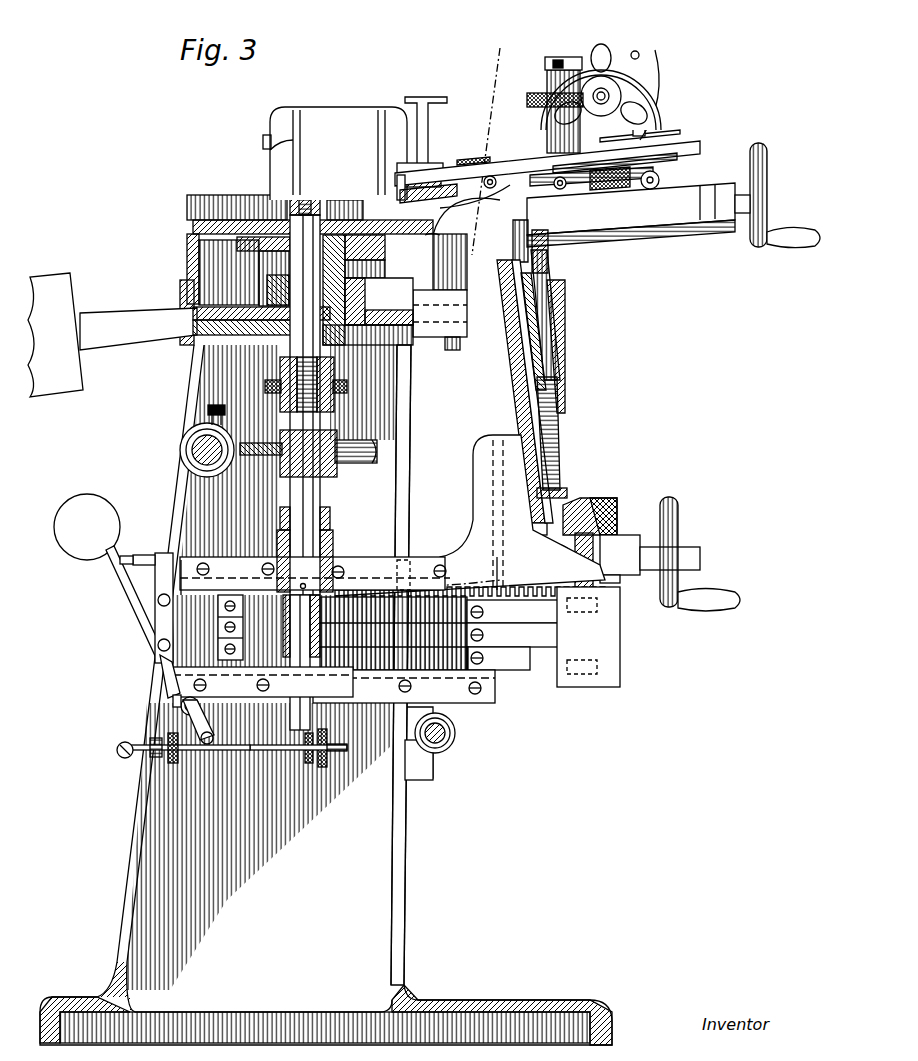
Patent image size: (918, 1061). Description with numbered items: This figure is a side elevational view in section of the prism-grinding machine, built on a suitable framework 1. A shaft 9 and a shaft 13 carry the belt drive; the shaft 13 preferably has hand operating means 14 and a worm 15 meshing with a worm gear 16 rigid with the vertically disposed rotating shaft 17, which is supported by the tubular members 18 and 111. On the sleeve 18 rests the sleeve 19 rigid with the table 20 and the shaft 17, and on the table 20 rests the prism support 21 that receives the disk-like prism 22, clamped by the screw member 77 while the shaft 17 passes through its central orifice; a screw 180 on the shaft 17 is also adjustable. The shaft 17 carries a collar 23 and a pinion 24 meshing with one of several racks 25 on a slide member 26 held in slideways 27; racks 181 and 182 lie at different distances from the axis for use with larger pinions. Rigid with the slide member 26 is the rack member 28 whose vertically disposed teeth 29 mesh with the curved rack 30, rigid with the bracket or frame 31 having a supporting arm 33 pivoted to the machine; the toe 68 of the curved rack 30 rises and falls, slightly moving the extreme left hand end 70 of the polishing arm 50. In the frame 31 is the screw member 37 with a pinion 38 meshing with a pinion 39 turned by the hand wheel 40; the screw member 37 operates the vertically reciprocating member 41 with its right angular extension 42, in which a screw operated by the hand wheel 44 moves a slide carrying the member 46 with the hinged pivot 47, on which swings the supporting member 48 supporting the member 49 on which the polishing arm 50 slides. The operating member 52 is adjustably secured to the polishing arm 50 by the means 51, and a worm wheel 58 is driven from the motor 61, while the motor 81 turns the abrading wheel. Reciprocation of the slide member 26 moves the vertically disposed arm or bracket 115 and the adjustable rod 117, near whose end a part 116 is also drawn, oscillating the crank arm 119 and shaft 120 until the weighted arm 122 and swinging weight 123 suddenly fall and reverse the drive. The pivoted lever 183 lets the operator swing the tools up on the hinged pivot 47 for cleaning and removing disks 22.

The framework 1 is at (128, 850).
The shaft 9 is at (447, 738).
The shaft 13 is at (205, 450).
The hand operating means 14 is at (356, 541).
The worm 15 is at (198, 428).
The worm gear 16 is at (365, 448).
The vertically disposed rotating shaft 17 is at (200, 320).
The tubular member 18 is at (330, 365).
The sleeve 19 is at (352, 298).
The table 20 is at (370, 258).
The prism support 21 is at (438, 230).
The disk like prism 22 is at (220, 222).
The collar 23 is at (275, 582).
The pinion 24 is at (268, 648).
The racks 25 is at (222, 612).
The slide member 26 is at (160, 610).
The slideways 27 is at (462, 700).
The rack member 28 is at (548, 615).
The vertically disposed teeth 29 is at (558, 607).
The curved rack 30 is at (455, 570).
The bracket or frame 31 is at (518, 400).
The supporting arm 33 is at (500, 262).
The screw member 37 is at (558, 440).
The pinion 38 is at (585, 500).
The pinion 39 is at (625, 535).
The hand wheel 40 is at (680, 515).
The vertically reciprocating member 41 is at (562, 358).
The right angular extension 42 is at (675, 230).
The hand wheel 44 is at (764, 165).
The member 46 is at (620, 192).
The hinged pivot 47 is at (660, 180).
The supporting member 48 is at (610, 182).
The member 49 is at (640, 126).
The polishing arm 50 is at (496, 165).
The means 51 is at (680, 132).
The operating member 52 is at (660, 66).
The worm wheel 58 is at (530, 98).
The motor 61 is at (625, 45).
The toe 68 is at (548, 562).
The extreme left hand end 70 is at (458, 160).
The screw member 77 is at (320, 195).
The motor 81 is at (343, 116).
The tubular member 111 is at (277, 538).
The vertically disposed arm or bracket 115 is at (158, 634).
The screw 116 is at (118, 745).
The adjustable rod 117 is at (222, 748).
The crank arm 119 is at (205, 720).
The shaft 120 is at (180, 705).
The weighted arm 122 is at (108, 567).
The swinging weight 123 is at (85, 500).
The screw 180 is at (300, 372).
The rack 181 is at (485, 660).
The rack 182 is at (485, 638).
The pivoted lever 183 is at (455, 195).